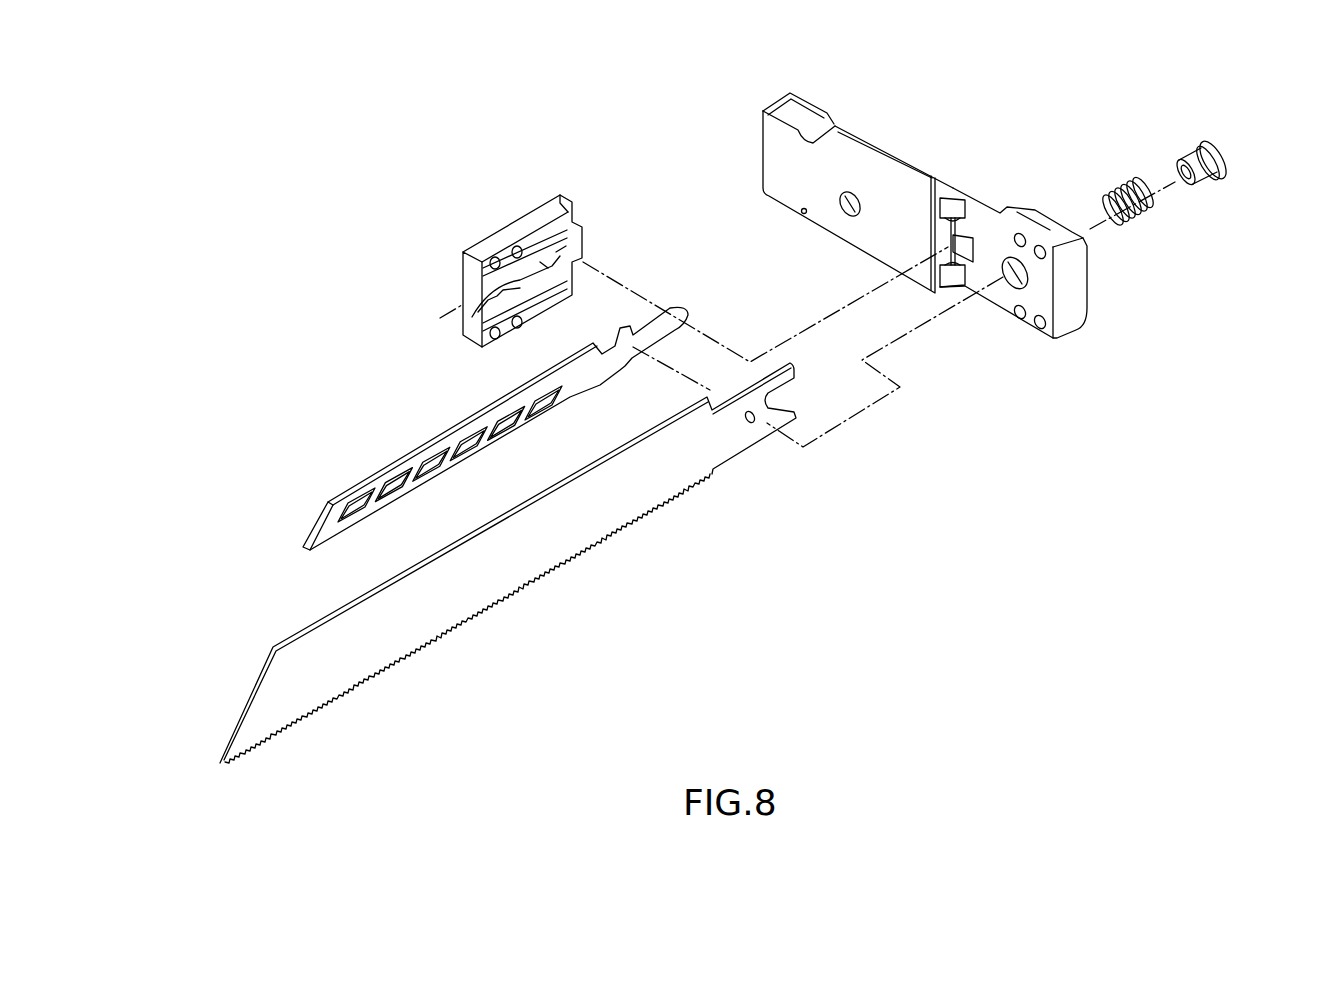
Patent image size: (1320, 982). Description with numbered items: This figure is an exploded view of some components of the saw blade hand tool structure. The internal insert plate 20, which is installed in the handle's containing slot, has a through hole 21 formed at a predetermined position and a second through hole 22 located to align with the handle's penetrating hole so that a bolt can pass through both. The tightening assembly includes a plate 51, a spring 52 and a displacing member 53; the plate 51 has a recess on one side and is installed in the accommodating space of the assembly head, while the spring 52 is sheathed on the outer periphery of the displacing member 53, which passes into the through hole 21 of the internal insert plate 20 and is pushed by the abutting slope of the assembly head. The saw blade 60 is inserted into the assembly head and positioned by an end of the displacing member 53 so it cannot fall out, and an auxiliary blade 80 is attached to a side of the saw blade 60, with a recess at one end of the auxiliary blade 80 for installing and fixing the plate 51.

The internal insert plate 20 is at (892, 162).
The through hole 21 is at (1007, 287).
The through hole 22 is at (838, 212).
The plate 51 is at (517, 227).
The spring 52 is at (463, 305).
The displacing member 53 is at (1203, 177).
The saw blade 60 is at (507, 580).
The auxiliary blade 80 is at (380, 470).